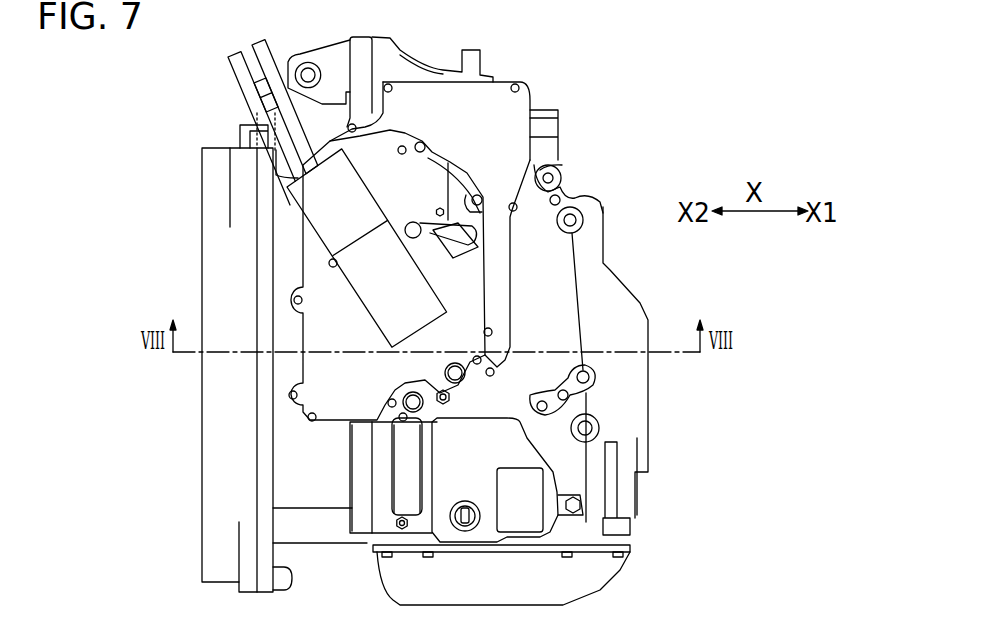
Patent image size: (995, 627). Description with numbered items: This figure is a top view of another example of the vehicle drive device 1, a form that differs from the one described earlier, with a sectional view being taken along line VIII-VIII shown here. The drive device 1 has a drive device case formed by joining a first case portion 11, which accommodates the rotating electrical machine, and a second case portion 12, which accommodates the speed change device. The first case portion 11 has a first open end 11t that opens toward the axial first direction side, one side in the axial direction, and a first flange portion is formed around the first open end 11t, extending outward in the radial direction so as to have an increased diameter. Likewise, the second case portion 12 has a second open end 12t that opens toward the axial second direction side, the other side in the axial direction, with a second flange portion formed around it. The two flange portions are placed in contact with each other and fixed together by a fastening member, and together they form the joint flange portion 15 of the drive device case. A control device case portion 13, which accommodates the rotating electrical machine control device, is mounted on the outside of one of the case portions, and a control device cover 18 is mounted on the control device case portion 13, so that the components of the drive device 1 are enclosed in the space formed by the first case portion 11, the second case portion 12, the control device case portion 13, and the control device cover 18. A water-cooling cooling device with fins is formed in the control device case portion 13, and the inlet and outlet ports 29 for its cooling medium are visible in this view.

The drive device 1 is at (170, 183).
The first case portion 11 is at (214, 243).
The second case portion 12 is at (648, 402).
The control device case portion 13 is at (531, 161).
The joint flange portion 15 is at (372, 540).
The control device cover 18 is at (303, 373).
The inlet and outlet ports for a cooling medium 29 is at (457, 381).
The first open end 11t is at (384, 462).
The second open end 12t is at (363, 466).